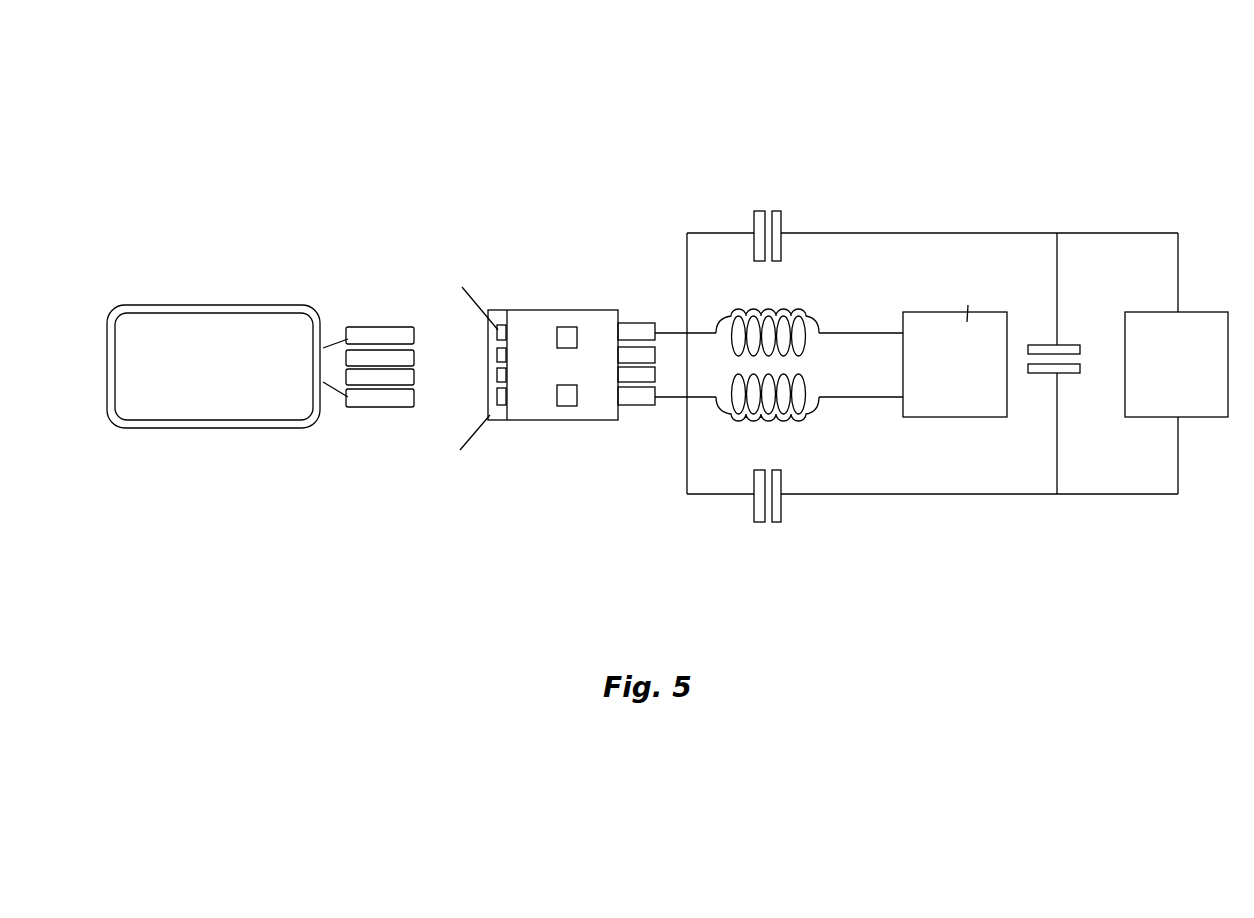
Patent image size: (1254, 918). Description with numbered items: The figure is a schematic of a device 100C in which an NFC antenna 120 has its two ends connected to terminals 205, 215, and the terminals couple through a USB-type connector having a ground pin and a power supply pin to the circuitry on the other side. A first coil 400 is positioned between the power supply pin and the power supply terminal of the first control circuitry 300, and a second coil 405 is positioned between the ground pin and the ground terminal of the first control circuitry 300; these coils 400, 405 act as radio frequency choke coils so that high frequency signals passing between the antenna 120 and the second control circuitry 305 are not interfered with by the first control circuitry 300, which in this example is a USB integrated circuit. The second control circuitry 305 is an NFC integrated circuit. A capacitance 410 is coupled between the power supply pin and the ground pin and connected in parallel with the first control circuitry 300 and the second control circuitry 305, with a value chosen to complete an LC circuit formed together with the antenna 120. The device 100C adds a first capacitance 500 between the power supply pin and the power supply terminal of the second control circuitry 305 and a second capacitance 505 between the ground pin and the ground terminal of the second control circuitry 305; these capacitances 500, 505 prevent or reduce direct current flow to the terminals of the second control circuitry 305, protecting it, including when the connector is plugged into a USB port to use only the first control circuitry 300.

The device 100C is at (580, 53).
The antenna 120 is at (245, 306).
The terminal 205 is at (370, 327).
The terminal 215 is at (358, 408).
The second coil 405 is at (718, 315).
The first coil 400 is at (717, 417).
The second capacitance 505 is at (775, 211).
The first capacitance 500 is at (776, 522).
The capacitance 410 is at (1071, 343).
The first control circuitry 300 is at (955, 417).
The second control circuitry 305 is at (1162, 310).